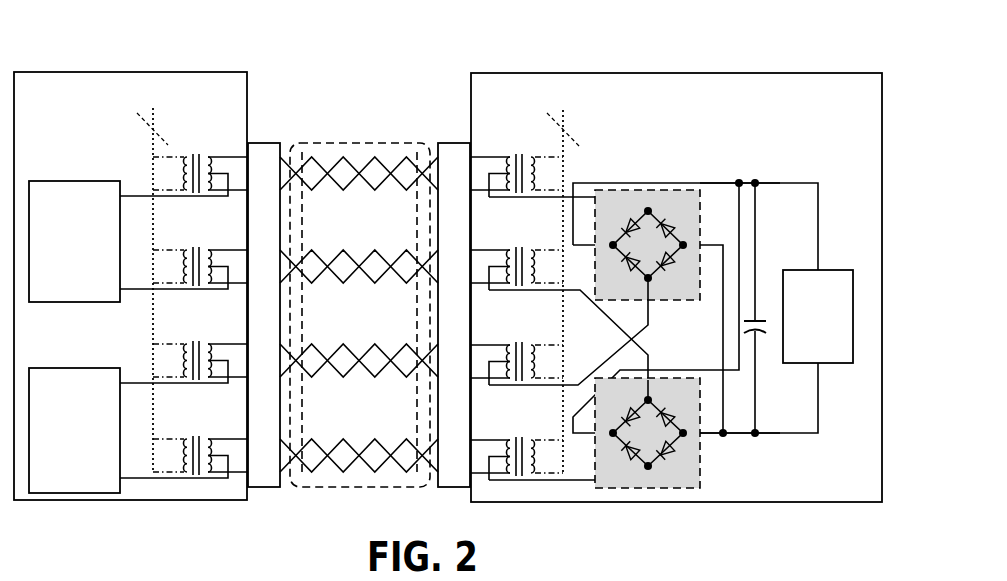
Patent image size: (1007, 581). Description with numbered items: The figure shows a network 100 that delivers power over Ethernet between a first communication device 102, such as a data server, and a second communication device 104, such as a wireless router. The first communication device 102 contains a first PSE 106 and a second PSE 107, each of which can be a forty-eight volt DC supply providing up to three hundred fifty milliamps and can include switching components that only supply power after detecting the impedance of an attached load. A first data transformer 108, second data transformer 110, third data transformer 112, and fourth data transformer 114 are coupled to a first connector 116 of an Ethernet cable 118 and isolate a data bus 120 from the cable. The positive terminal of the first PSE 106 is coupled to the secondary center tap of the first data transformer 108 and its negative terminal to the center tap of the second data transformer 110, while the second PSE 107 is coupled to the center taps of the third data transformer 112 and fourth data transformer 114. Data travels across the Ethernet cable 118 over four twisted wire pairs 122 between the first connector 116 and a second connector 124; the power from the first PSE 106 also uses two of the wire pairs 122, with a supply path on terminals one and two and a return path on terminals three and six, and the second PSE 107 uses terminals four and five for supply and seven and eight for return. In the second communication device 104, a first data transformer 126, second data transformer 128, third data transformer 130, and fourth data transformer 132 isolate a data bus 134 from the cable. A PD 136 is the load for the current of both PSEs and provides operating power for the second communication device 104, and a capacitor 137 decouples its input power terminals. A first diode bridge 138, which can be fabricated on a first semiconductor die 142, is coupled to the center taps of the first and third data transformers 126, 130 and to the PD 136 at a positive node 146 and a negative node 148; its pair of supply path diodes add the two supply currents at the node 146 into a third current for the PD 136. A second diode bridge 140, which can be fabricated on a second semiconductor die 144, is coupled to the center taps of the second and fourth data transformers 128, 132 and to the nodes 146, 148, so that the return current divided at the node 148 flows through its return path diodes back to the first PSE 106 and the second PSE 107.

The network 100 is at (80, 42).
The first communication device 102 is at (57, 101).
The second communication device 104 is at (870, 103).
The first PSE 106 is at (69, 181).
The second PSE 107 is at (62, 368).
The first data transformer 108 is at (246, 158).
The second data transformer 110 is at (246, 251).
The third data transformer 112 is at (246, 345).
The fourth data transformer 114 is at (246, 440).
The first connector 116 is at (268, 143).
The Ethernet cable 118 is at (352, 143).
The data bus 120 is at (152, 145).
The wire pairs 122 is at (393, 190).
The second connector 124 is at (456, 143).
The first data transformer 126 is at (476, 157).
The second data transformer 128 is at (476, 251).
The third data transformer 130 is at (476, 346).
The fourth data transformer 132 is at (476, 442).
The data bus 134 is at (572, 134).
The PD 136 is at (819, 270).
The capacitor 137 is at (772, 280).
The first diode bridge 138 is at (658, 296).
The second diode bridge 140 is at (662, 385).
The first semiconductor die 142 is at (657, 190).
The second semiconductor die 144 is at (700, 466).
The node 146 is at (772, 160).
The node 148 is at (775, 458).